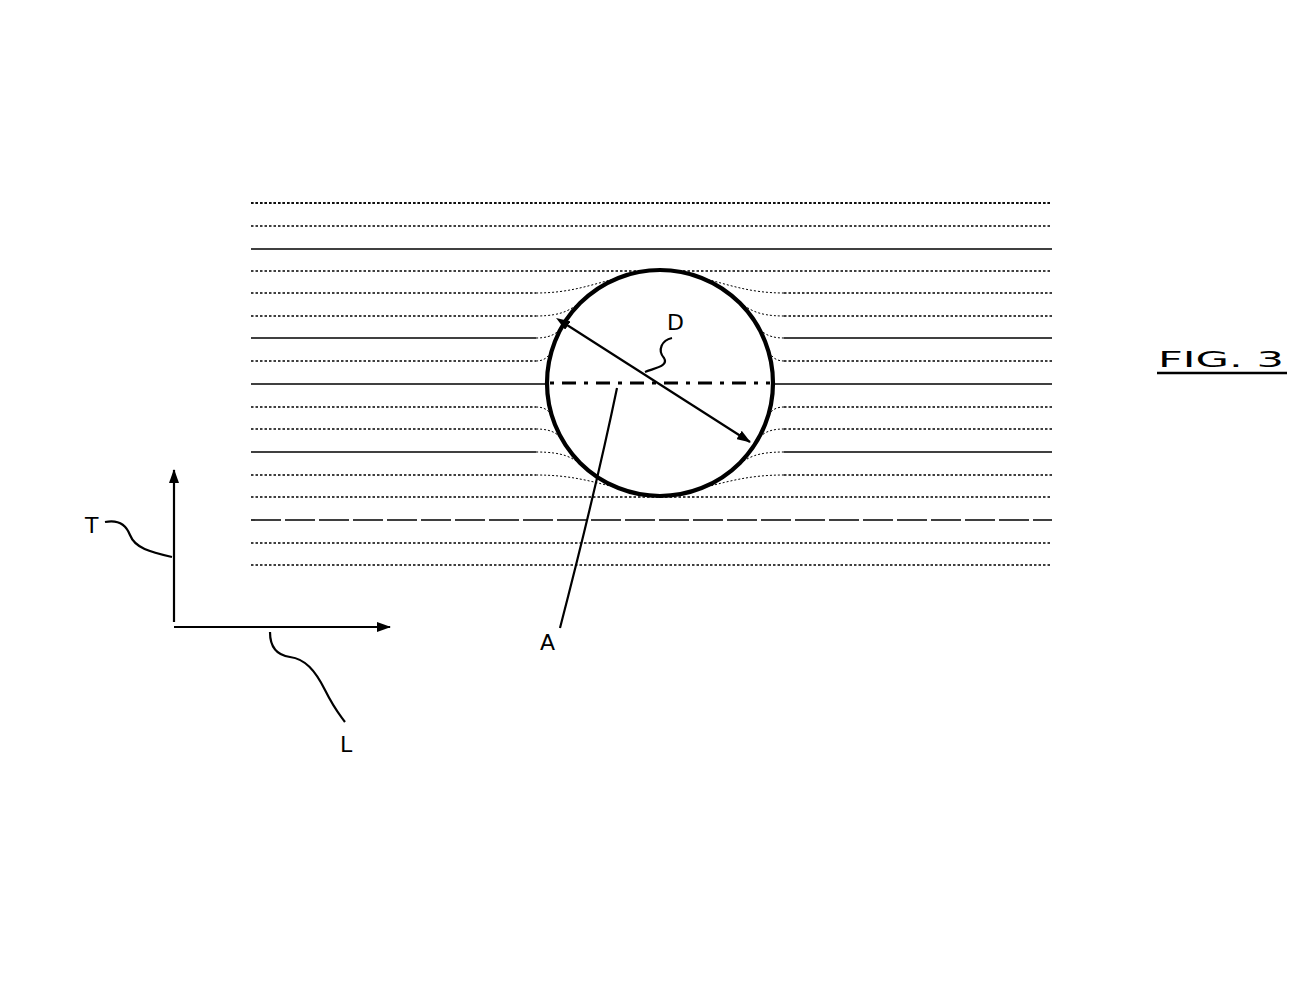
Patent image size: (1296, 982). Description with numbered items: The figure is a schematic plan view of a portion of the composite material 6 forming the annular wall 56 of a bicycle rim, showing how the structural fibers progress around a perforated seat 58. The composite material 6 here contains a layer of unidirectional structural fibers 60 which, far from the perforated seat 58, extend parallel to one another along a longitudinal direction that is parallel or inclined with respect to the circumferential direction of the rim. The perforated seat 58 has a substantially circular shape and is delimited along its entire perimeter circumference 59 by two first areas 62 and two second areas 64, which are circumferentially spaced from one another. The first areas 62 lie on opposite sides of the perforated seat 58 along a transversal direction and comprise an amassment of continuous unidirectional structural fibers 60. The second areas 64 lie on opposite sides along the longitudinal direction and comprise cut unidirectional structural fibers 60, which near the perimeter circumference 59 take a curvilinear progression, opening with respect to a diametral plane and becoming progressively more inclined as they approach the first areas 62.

The composite material 6 is at (1025, 280).
The annular wall 56 is at (1082, 187).
The perforated seat 58 is at (628, 318).
The perimeter circumference 59 is at (716, 487).
The unidirectional structural fibers 60 is at (832, 317).
The first areas 62 is at (662, 262).
The second areas 64 is at (478, 382).